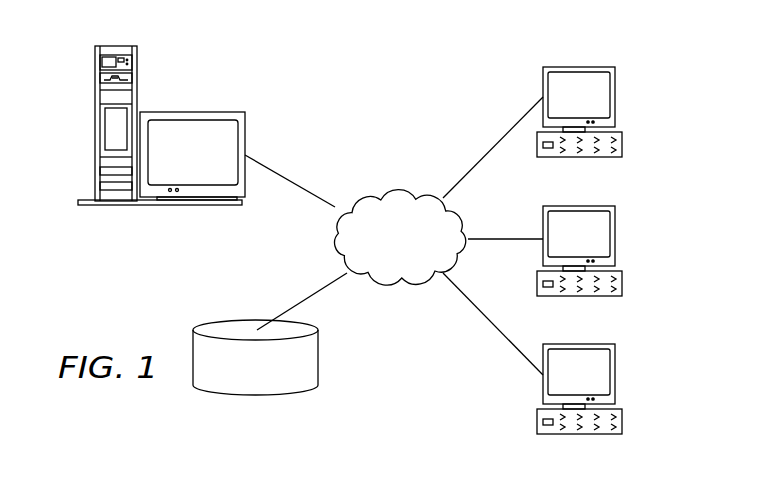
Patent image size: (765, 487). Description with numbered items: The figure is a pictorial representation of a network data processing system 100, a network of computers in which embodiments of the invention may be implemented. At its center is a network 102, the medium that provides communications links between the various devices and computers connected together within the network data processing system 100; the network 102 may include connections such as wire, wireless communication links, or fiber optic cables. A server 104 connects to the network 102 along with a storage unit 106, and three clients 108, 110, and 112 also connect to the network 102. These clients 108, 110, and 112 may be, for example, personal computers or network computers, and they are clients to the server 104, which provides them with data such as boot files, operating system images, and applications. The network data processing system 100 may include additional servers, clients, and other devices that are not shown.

The network data processing system 100 is at (453, 74).
The network 102 is at (373, 192).
The server 104 is at (95, 128).
The storage unit 106 is at (240, 403).
The client 108 is at (617, 97).
The client 110 is at (617, 238).
The client 112 is at (617, 375).